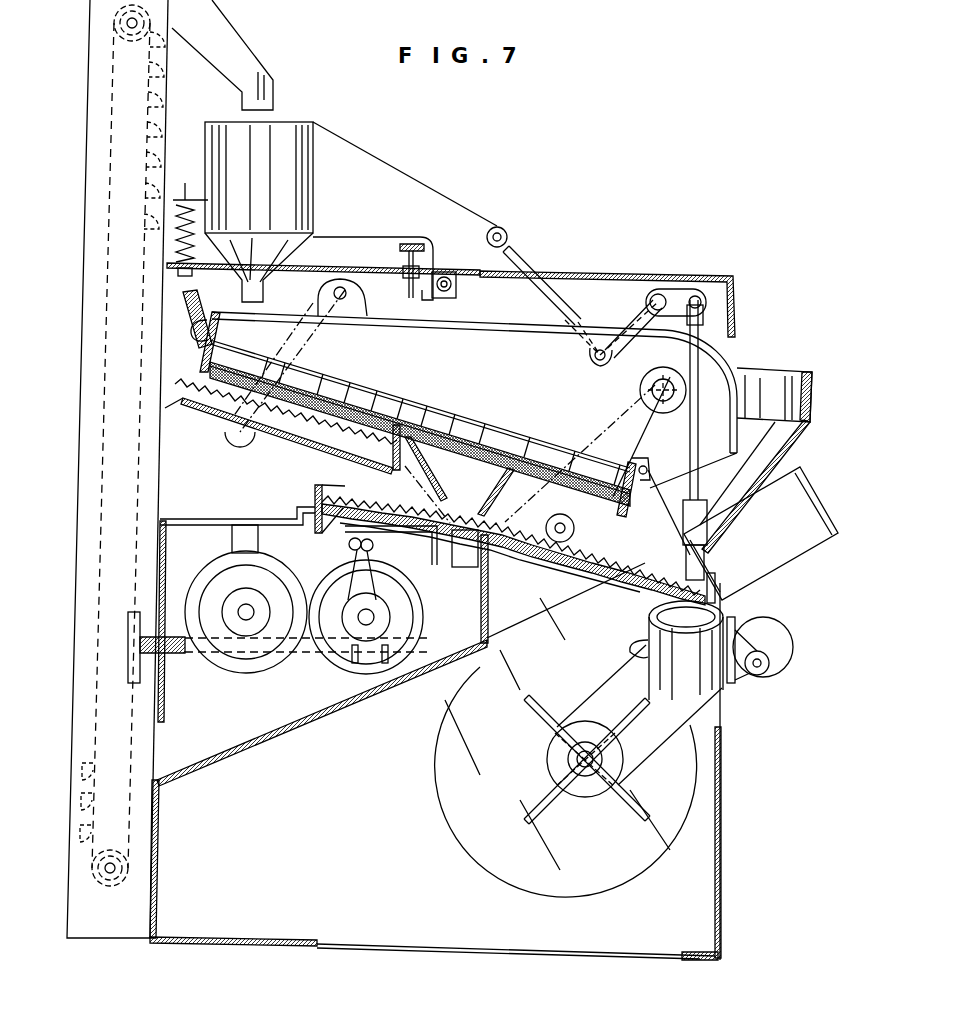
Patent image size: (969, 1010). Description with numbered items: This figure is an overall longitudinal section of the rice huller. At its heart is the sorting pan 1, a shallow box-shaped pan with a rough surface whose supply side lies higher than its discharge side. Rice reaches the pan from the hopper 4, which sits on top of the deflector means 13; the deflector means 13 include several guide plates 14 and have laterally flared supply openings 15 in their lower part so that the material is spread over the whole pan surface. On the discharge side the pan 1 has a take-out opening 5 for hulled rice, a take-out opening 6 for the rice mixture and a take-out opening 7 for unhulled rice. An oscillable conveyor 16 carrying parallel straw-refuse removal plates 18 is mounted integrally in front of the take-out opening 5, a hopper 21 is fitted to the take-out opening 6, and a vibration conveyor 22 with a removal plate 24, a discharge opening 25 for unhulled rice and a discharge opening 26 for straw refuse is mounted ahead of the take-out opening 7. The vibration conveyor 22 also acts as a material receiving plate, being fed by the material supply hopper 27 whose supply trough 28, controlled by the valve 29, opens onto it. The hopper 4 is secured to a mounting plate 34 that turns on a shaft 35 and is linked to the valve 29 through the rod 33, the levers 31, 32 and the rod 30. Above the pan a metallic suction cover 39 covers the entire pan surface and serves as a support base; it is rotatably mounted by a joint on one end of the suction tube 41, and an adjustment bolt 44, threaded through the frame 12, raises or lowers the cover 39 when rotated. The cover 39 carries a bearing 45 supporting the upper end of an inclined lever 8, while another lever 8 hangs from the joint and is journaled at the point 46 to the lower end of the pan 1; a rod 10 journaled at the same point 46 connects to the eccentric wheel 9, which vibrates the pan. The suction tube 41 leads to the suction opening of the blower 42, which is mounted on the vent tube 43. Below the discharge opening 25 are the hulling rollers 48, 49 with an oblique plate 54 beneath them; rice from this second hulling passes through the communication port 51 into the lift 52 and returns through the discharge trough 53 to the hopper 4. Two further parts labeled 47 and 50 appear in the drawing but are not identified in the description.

The pan 1 is at (545, 452).
The hopper 4 is at (296, 135).
The take-out opening for hulled rice 5 is at (332, 378).
The take-out opening for the rice mixture 6 is at (462, 428).
The take-out opening for the unhulled rice 7 is at (580, 462).
The inclined lever 8 is at (292, 318).
The eccentric wheel 9 is at (793, 647).
The rod 10 is at (645, 625).
The frame 12 is at (670, 280).
The deflector means 13 is at (210, 294).
The guide plates 14 is at (272, 360).
The supply openings 15 is at (390, 396).
The oscillable conveyor 16 is at (188, 408).
The straw-refuse removal plates 18 is at (200, 372).
The hopper 21 is at (465, 565).
The vibration conveyor 22 is at (518, 545).
The removal plate for the straw-refuse 24 is at (545, 522).
The discharge opening for the unhulled rice 25 is at (340, 540).
The discharge opening for the straw refuse 26 is at (325, 492).
The material supply hopper 27 is at (808, 396).
The supply trough 28 is at (705, 565).
The valve 29 is at (708, 522).
The rod 30 is at (698, 480).
The lever 31 is at (690, 275).
The lever 32 is at (625, 312).
The rod 33 is at (520, 265).
The mounting plate 34 is at (352, 152).
The shaft 35 is at (455, 290).
The suction cover 39 is at (580, 340).
The suction tube 41 is at (722, 372).
The blower 42 is at (630, 872).
The vent tube 43 is at (825, 510).
The adjustment bolt 44 is at (410, 244).
The bearing 45 is at (340, 287).
The journal point 46 is at (660, 382).
The bracket 47 is at (300, 512).
The hulling roller 48 is at (268, 662).
The hulling roller 49 is at (398, 662).
The adjusting screw 50 is at (130, 655).
The communication port 51 is at (160, 770).
The lift 52 is at (85, 833).
The discharge trough 53 is at (268, 78).
The oblique plate 54 is at (460, 650).